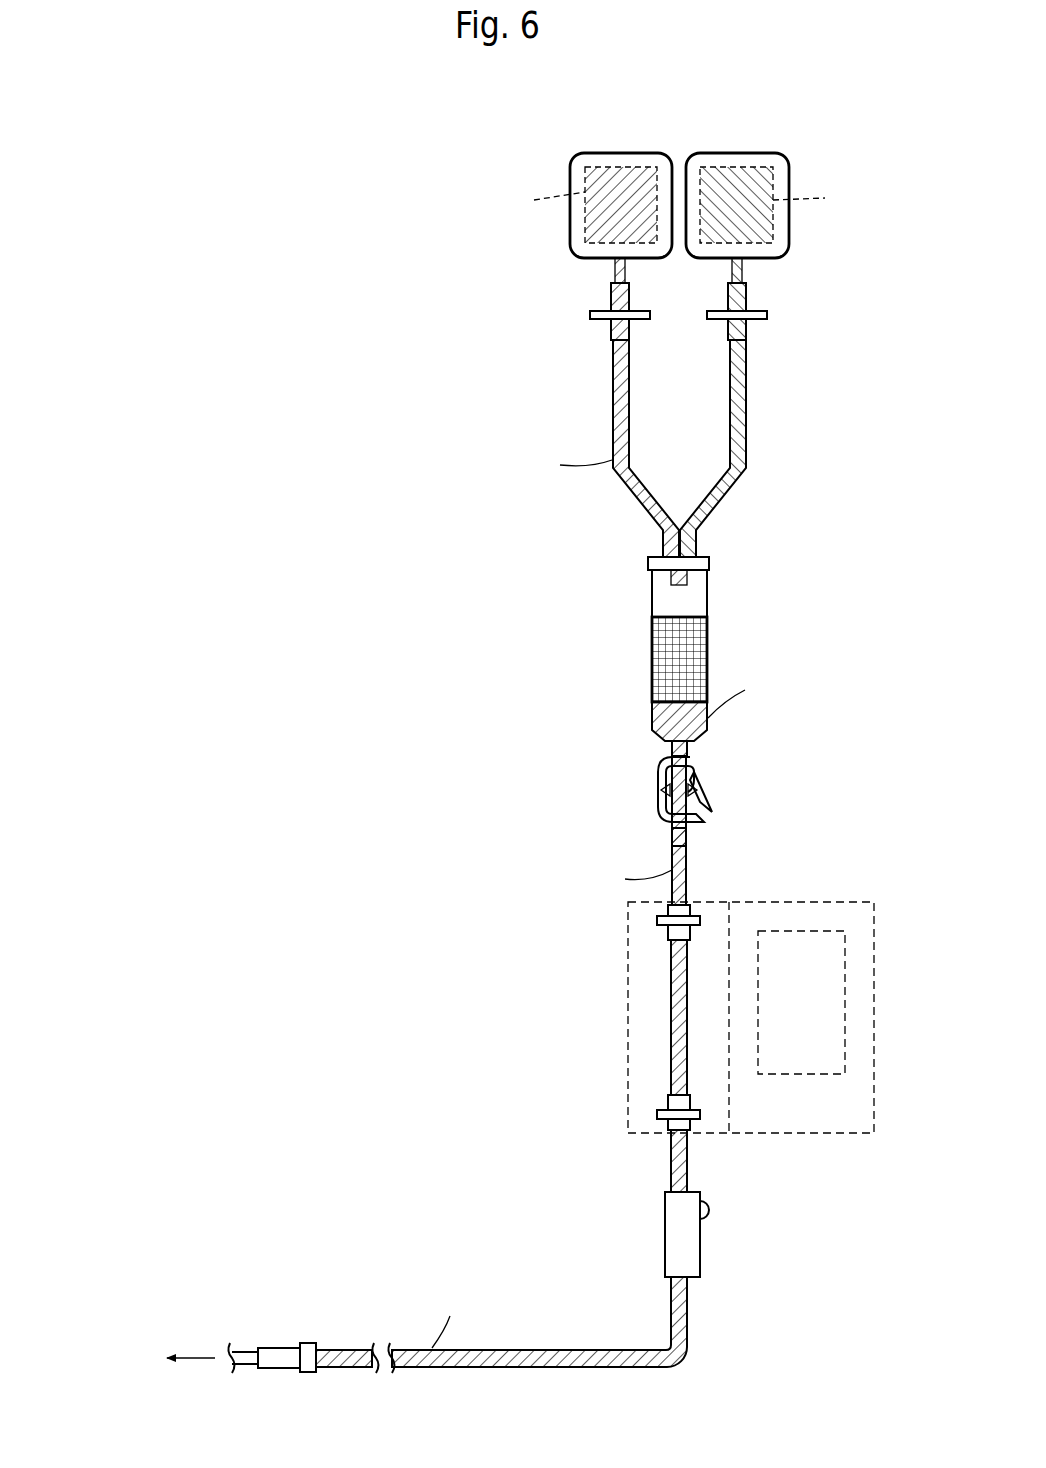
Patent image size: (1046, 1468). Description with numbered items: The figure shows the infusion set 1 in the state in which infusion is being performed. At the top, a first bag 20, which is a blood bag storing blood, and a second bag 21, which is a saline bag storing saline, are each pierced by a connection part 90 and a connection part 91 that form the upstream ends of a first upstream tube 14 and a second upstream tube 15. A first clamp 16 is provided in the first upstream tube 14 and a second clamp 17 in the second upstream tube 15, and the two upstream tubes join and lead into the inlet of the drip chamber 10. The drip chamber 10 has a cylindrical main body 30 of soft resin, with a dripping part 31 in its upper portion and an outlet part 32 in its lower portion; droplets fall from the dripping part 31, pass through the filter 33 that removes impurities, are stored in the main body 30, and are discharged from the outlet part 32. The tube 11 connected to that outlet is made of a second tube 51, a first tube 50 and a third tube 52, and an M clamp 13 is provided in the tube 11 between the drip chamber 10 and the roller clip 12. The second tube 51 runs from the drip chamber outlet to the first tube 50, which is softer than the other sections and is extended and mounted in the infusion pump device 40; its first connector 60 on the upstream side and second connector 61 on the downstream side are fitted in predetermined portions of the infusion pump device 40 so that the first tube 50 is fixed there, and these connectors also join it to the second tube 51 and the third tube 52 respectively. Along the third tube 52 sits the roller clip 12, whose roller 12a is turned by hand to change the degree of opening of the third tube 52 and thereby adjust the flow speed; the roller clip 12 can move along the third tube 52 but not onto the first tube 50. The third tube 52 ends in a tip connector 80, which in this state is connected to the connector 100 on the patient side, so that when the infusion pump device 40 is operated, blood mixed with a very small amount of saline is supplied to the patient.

The infusion set 1 is at (488, 246).
The first bag 20 is at (621, 152).
The second bag 21 is at (737, 152).
The connection part 90 is at (614, 270).
The connection part 91 is at (744, 270).
The first clamp 16 is at (590, 315).
The second clamp 17 is at (767, 315).
The first upstream tube 14 is at (612, 383).
The second upstream tube 15 is at (747, 383).
The drip chamber 10 is at (712, 553).
The main body 30 is at (709, 583).
The dripping part 31 is at (671, 578).
The filter 33 is at (698, 628).
The outlet part 32 is at (689, 750).
The M clamp 13 is at (712, 780).
The tube 11 is at (690, 841).
The second tube 51 is at (672, 836).
The infusion pump device 40 is at (778, 898).
The first connector 60 is at (657, 920).
The first tube 50 is at (671, 1010).
The second connector 61 is at (657, 1114).
The third tube 52 is at (670, 1298).
The roller clip 12 is at (702, 1242).
The roller 12a is at (711, 1212).
The connector 100 is at (266, 1347).
The tip connector 80 is at (309, 1342).